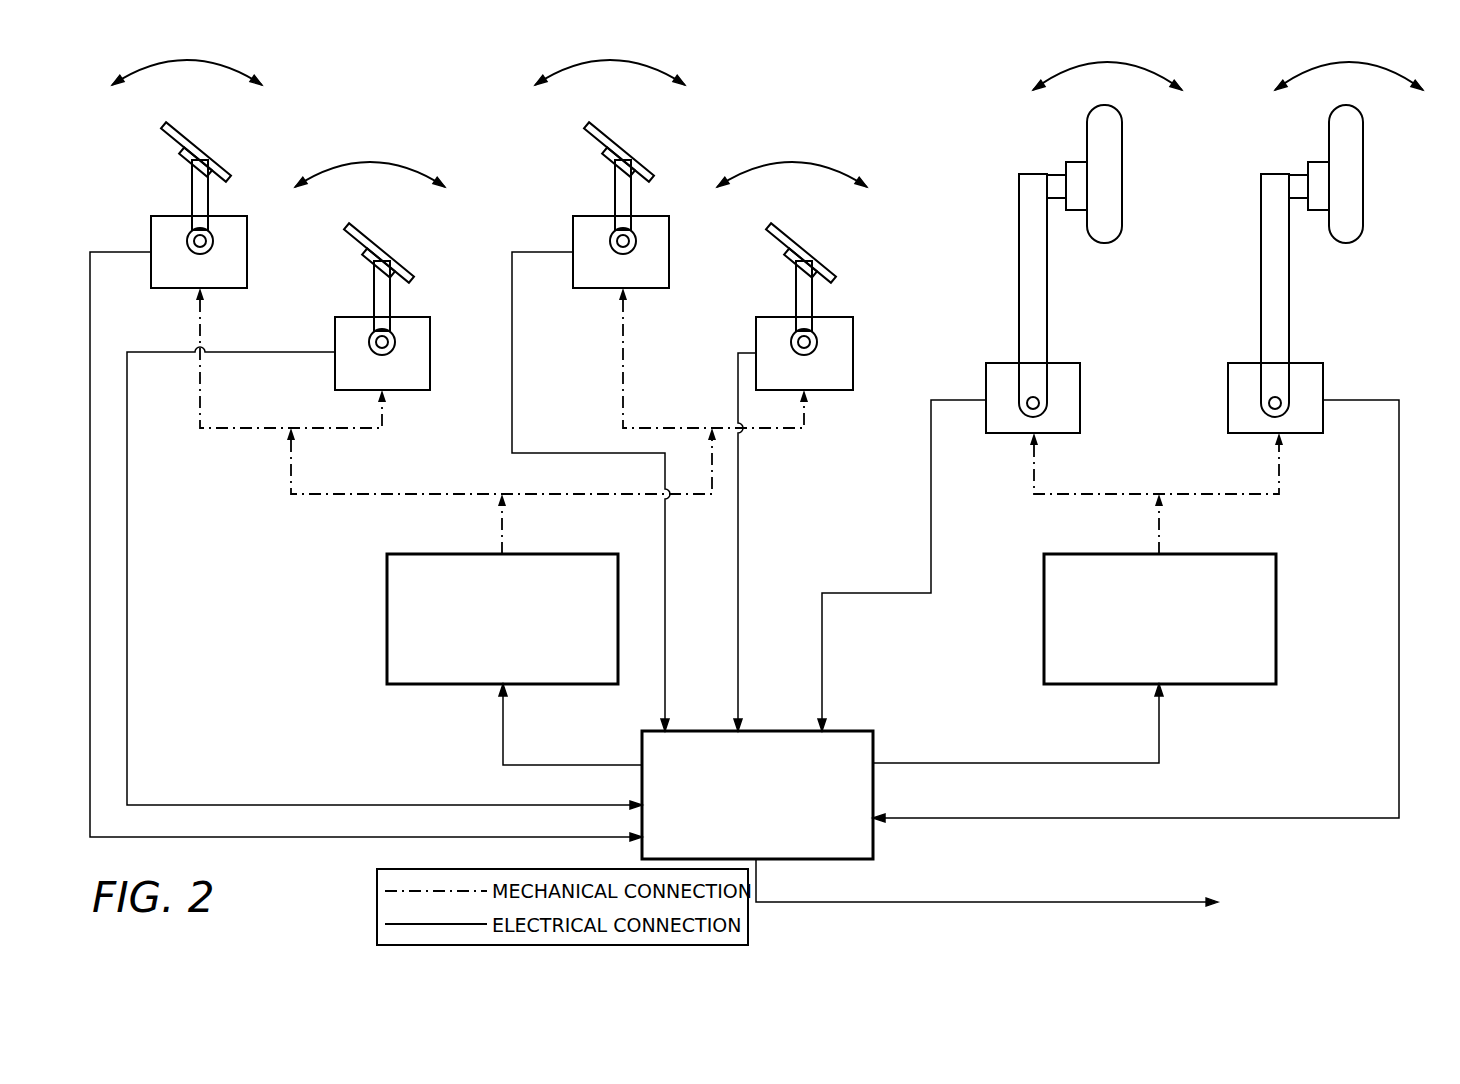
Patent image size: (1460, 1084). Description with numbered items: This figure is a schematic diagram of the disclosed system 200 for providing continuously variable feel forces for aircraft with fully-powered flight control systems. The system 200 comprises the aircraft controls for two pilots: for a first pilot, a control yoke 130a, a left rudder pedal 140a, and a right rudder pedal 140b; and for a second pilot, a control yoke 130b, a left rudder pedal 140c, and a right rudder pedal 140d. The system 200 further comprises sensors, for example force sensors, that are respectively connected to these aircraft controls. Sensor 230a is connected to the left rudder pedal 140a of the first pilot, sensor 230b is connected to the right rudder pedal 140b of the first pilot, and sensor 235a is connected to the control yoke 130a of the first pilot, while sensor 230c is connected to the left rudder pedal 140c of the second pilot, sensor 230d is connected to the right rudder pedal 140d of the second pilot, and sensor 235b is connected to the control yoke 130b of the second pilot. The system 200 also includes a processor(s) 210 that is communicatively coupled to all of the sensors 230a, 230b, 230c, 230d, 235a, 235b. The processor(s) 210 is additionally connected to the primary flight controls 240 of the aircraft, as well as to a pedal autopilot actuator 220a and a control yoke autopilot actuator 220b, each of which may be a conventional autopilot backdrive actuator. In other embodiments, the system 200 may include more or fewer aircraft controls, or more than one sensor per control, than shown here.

The system 200 is at (299, 904).
The left rudder pedal 140a is at (223, 160).
The right rudder pedal 140b is at (385, 245).
The left rudder pedal 140c is at (646, 160).
The right rudder pedal 140d is at (808, 245).
The sensor 230a is at (190, 162).
The sensor 230b is at (370, 262).
The sensor 230c is at (613, 162).
The sensor 230d is at (793, 262).
The control yoke 130a is at (1122, 167).
The control yoke 130b is at (1364, 167).
The sensor 235a is at (1075, 160).
The sensor 235b is at (1319, 160).
The pedal autopilot actuator 220a is at (387, 620).
The control yoke autopilot actuator 220b is at (1276, 600).
The processor(s) 210 is at (860, 730).
The primary flight controls 240 is at (1365, 893).